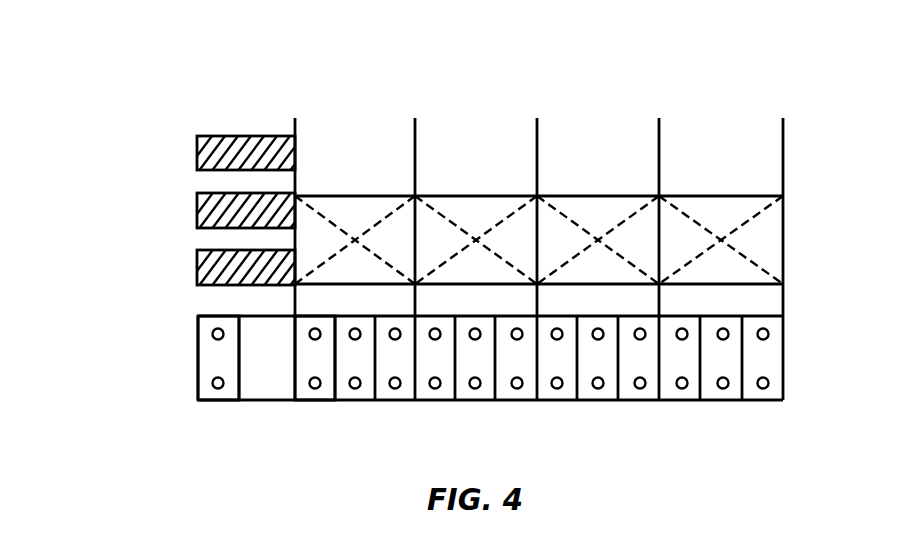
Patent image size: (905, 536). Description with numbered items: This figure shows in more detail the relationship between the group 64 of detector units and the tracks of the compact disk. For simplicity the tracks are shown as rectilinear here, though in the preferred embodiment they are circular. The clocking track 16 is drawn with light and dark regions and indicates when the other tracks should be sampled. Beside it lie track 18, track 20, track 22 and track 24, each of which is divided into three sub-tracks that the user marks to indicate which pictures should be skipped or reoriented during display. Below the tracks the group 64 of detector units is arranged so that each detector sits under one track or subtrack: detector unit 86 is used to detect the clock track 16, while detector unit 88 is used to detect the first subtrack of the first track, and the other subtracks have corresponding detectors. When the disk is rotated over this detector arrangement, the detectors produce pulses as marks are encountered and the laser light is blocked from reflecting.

The clocking track 16 is at (228, 57).
The track 18 is at (335, 57).
The track 20 is at (455, 57).
The track 22 is at (578, 57).
The track 24 is at (700, 57).
The group of detector units 64 is at (146, 364).
The detector unit 86 is at (197, 353).
The detector unit 88 is at (310, 315).